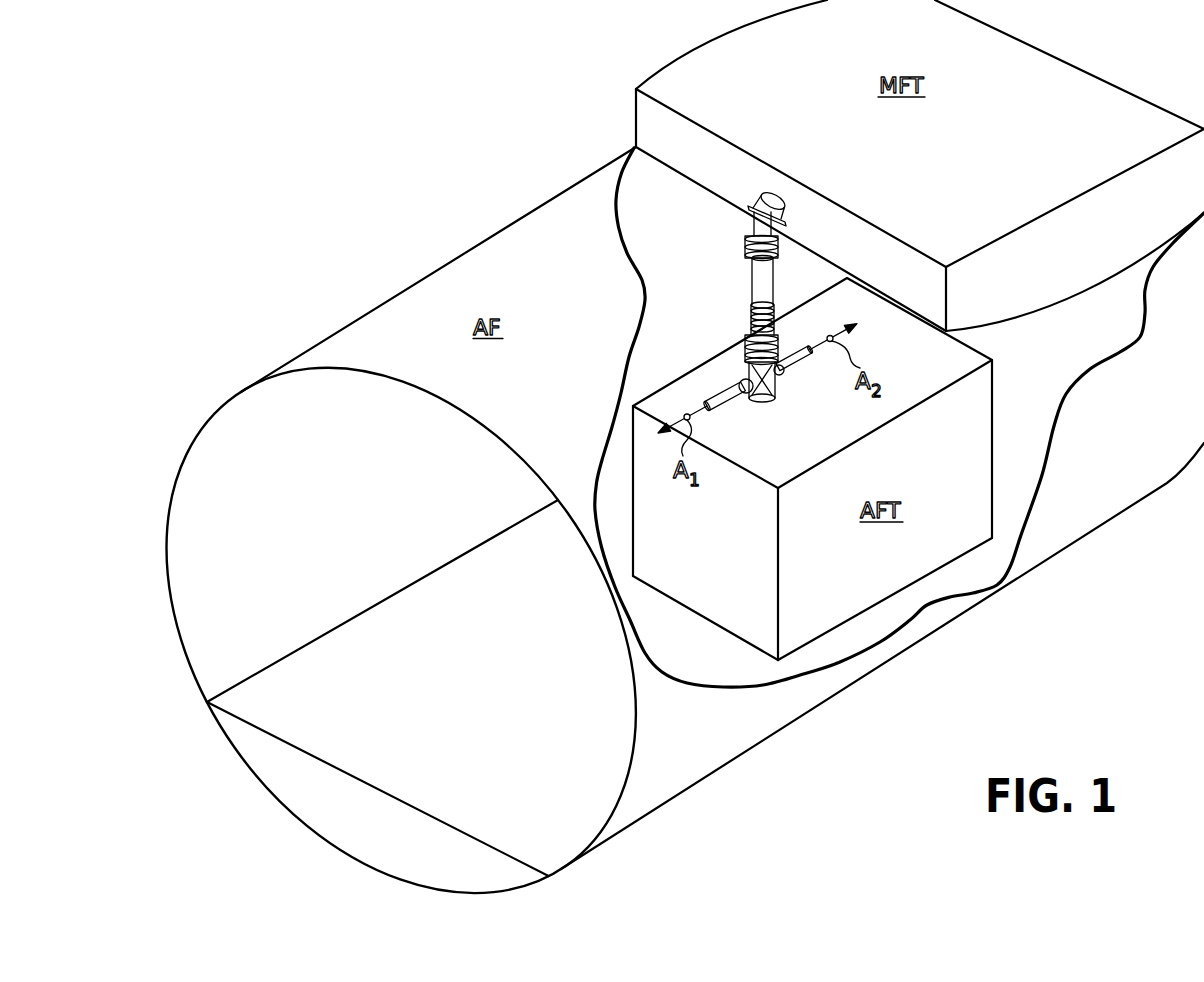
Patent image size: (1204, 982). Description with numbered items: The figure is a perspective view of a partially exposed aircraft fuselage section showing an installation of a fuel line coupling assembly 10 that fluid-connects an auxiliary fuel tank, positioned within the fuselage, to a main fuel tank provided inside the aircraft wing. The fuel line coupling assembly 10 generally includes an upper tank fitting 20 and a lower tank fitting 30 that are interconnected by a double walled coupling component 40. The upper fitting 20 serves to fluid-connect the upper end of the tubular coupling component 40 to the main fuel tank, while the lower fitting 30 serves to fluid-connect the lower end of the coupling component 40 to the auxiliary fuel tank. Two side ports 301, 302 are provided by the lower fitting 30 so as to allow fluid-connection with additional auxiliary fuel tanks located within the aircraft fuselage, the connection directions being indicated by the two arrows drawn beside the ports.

The fuel line coupling assembly 10 is at (797, 269).
The upper tank fitting 20 is at (736, 214).
The lower tank fitting 30 is at (788, 386).
The double walled coupling component 40 is at (738, 289).
The side port 301 is at (748, 393).
The side port 302 is at (781, 360).